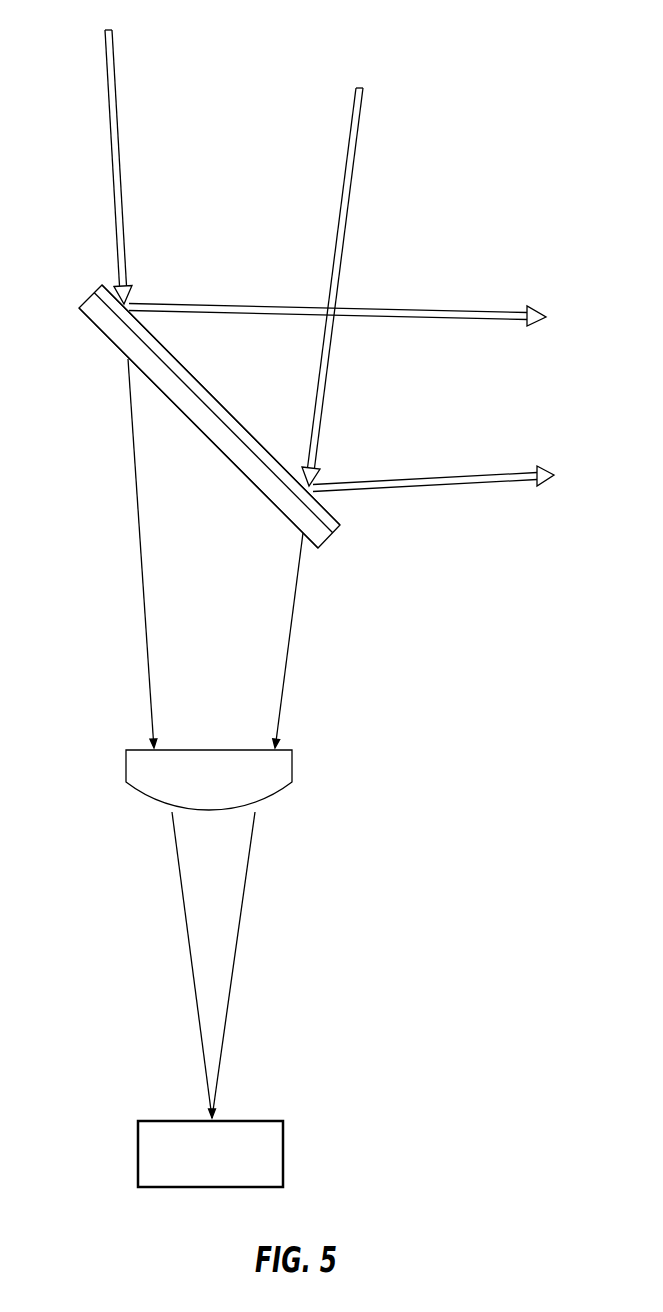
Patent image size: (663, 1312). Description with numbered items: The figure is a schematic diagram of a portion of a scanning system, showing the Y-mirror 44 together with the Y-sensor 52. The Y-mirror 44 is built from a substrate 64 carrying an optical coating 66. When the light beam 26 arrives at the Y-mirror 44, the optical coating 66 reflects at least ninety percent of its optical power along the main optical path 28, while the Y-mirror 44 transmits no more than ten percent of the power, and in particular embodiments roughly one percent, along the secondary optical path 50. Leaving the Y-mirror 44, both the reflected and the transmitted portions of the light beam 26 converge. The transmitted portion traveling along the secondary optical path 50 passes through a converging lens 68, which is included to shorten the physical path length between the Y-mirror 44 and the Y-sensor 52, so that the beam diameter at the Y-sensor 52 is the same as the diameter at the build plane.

The light beam 26 is at (114, 58).
The main optical path 28 is at (108, 80).
The Y-mirror 44 is at (97, 291).
The substrate 64 is at (115, 332).
The optical coating 66 is at (341, 527).
The secondary optical path 50 is at (138, 540).
The converging lens 68 is at (283, 772).
The Y-sensor 52 is at (285, 1151).